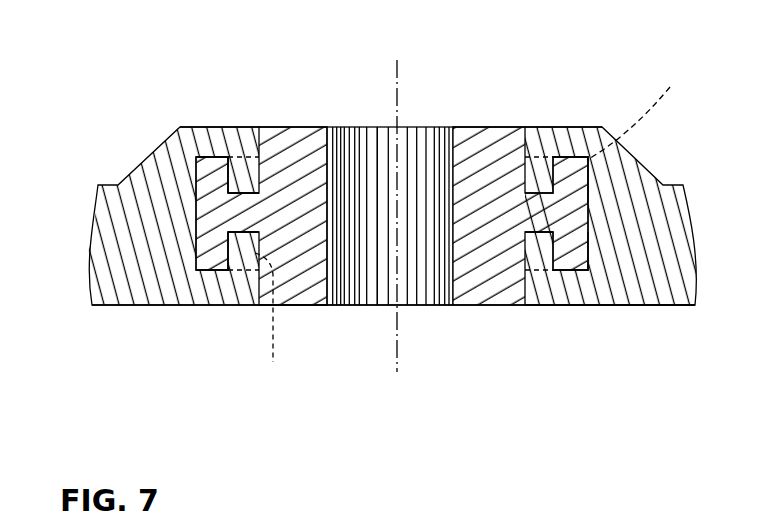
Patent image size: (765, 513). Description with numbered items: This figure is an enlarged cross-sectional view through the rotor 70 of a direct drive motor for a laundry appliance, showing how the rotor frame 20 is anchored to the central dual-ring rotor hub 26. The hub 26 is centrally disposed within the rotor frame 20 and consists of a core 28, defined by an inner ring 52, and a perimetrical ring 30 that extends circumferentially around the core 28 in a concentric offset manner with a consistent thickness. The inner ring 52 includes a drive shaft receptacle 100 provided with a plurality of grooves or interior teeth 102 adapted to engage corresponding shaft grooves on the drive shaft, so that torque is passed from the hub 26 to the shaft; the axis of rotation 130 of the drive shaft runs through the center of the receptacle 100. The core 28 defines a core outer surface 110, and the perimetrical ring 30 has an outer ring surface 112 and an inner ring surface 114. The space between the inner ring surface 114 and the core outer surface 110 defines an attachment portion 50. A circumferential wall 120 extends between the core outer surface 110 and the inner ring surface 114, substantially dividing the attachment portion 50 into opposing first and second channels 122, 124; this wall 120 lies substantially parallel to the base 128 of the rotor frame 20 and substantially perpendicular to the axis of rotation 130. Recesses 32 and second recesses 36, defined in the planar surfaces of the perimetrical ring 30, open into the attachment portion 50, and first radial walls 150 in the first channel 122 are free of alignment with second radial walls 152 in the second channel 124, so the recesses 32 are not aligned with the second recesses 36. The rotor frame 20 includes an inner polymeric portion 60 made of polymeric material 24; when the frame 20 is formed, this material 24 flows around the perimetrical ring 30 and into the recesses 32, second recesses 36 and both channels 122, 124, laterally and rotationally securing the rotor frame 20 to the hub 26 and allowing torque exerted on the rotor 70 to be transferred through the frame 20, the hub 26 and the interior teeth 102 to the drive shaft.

The rotor frame 20 is at (98, 329).
The polymeric material 24 is at (227, 287).
The central dual-ring rotor hub 26 is at (298, 95).
The core 28 is at (283, 127).
The perimetrical ring 30 is at (213, 235).
The recesses 32 is at (540, 150).
The second recesses 36 is at (532, 274).
The attachment portion 50 is at (240, 150).
The inner ring 52 is at (483, 140).
The inner polymeric portion 60 is at (568, 320).
The rotor 70 is at (524, 98).
The drive shaft receptacle 100 is at (358, 122).
The interior teeth 102 is at (372, 288).
The core outer surface 110 is at (260, 288).
The outer ring surface 112 is at (588, 203).
The inner ring surface 114 is at (549, 246).
The circumferential wall 120 is at (246, 210).
The first channel 122 is at (218, 172).
The second channel 124 is at (218, 250).
The base 128 is at (653, 307).
The axis of rotation 130 is at (397, 337).
The first radial walls 150 is at (643, 114).
The second radial walls 152 is at (275, 321).